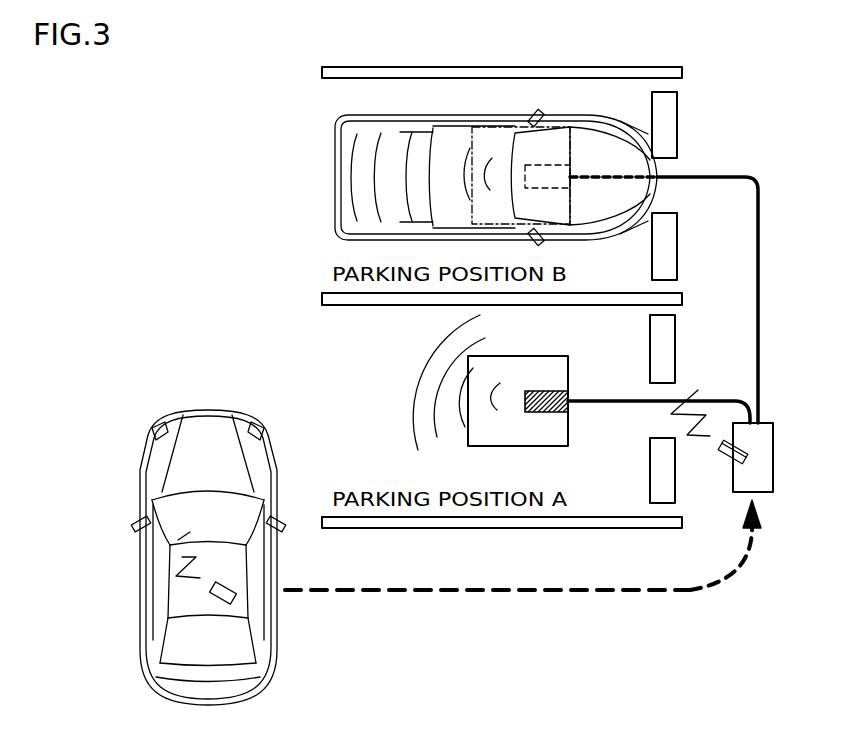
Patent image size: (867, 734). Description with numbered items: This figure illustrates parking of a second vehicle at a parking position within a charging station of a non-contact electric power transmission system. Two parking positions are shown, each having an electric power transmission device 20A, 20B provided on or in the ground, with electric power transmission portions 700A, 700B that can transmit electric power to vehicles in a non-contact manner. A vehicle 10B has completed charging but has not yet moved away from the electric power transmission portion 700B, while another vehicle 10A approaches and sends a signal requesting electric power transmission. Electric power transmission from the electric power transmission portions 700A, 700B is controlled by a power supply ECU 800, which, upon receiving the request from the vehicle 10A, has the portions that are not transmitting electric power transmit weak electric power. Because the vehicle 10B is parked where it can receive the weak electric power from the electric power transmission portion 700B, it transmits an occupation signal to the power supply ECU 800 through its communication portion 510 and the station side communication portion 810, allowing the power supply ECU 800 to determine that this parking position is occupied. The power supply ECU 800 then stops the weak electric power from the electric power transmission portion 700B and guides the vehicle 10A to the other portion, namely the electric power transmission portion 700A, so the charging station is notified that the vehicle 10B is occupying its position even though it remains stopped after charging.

The vehicle 10A is at (124, 636).
The vehicle 10B is at (323, 137).
The electric power transmission device 20A is at (536, 356).
The electric power transmission device 20B is at (518, 126).
The electric power transmission portion 700A is at (549, 394).
The electric power transmission portion 700B is at (552, 172).
The power supply ECU 800 is at (775, 458).
The communication portion 810 is at (728, 461).
The communication portion 510 is at (242, 584).